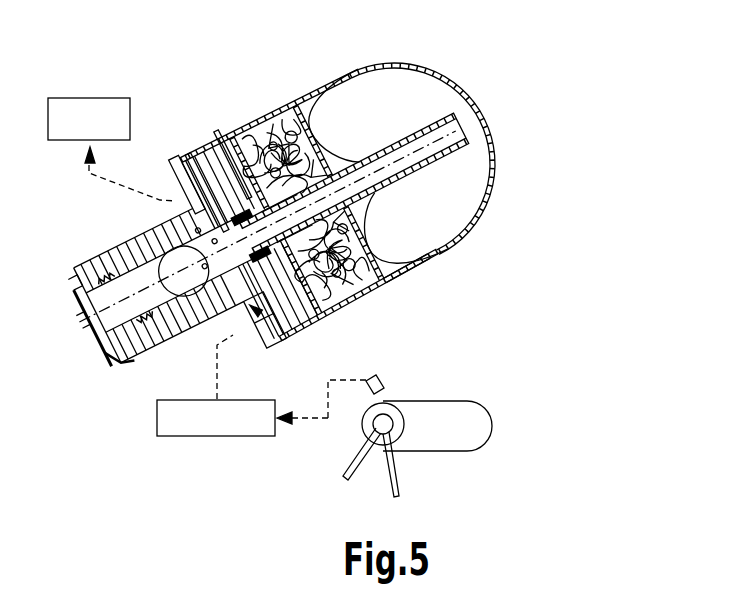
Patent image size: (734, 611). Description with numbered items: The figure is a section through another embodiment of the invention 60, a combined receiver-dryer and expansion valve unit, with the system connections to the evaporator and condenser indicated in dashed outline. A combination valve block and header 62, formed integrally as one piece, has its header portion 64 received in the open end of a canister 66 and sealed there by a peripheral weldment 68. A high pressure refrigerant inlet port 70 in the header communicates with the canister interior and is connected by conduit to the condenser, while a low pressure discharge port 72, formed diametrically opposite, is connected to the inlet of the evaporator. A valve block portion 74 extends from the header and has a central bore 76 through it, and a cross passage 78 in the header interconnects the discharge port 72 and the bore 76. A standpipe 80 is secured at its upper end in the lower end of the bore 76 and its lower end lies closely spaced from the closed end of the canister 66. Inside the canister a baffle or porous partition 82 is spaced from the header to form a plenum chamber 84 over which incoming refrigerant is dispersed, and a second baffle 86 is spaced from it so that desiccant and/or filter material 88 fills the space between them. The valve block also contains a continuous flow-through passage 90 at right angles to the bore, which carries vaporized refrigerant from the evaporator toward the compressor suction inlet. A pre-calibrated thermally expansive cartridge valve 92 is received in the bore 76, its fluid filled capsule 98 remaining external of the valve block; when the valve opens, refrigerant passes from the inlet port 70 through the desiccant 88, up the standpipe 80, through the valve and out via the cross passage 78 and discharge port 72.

The embodiment of the invention 60 is at (272, 251).
The combination valve block and header 62 is at (132, 207).
The header portion 64 is at (173, 158).
The canister 66 is at (322, 79).
The peripheral weldment 68 is at (275, 345).
The high pressure refrigerant inlet port 70 is at (318, 322).
The low pressure discharge port 72 is at (192, 205).
The valve block portion 74 is at (83, 258).
The central bore 76 is at (172, 305).
The cross passage 78 is at (278, 202).
The standpipe 80 is at (386, 147).
The baffle or porous partition 82 is at (365, 277).
The plenum chamber 84 is at (218, 145).
The second baffle or porous partition 86 is at (360, 64).
The desiccant and/or filter material 88 is at (350, 306).
The continuous flow-through passage 90 is at (168, 250).
The thermally expansive cartridge valve 92 is at (150, 352).
The fluid filled capsule 98 is at (83, 320).